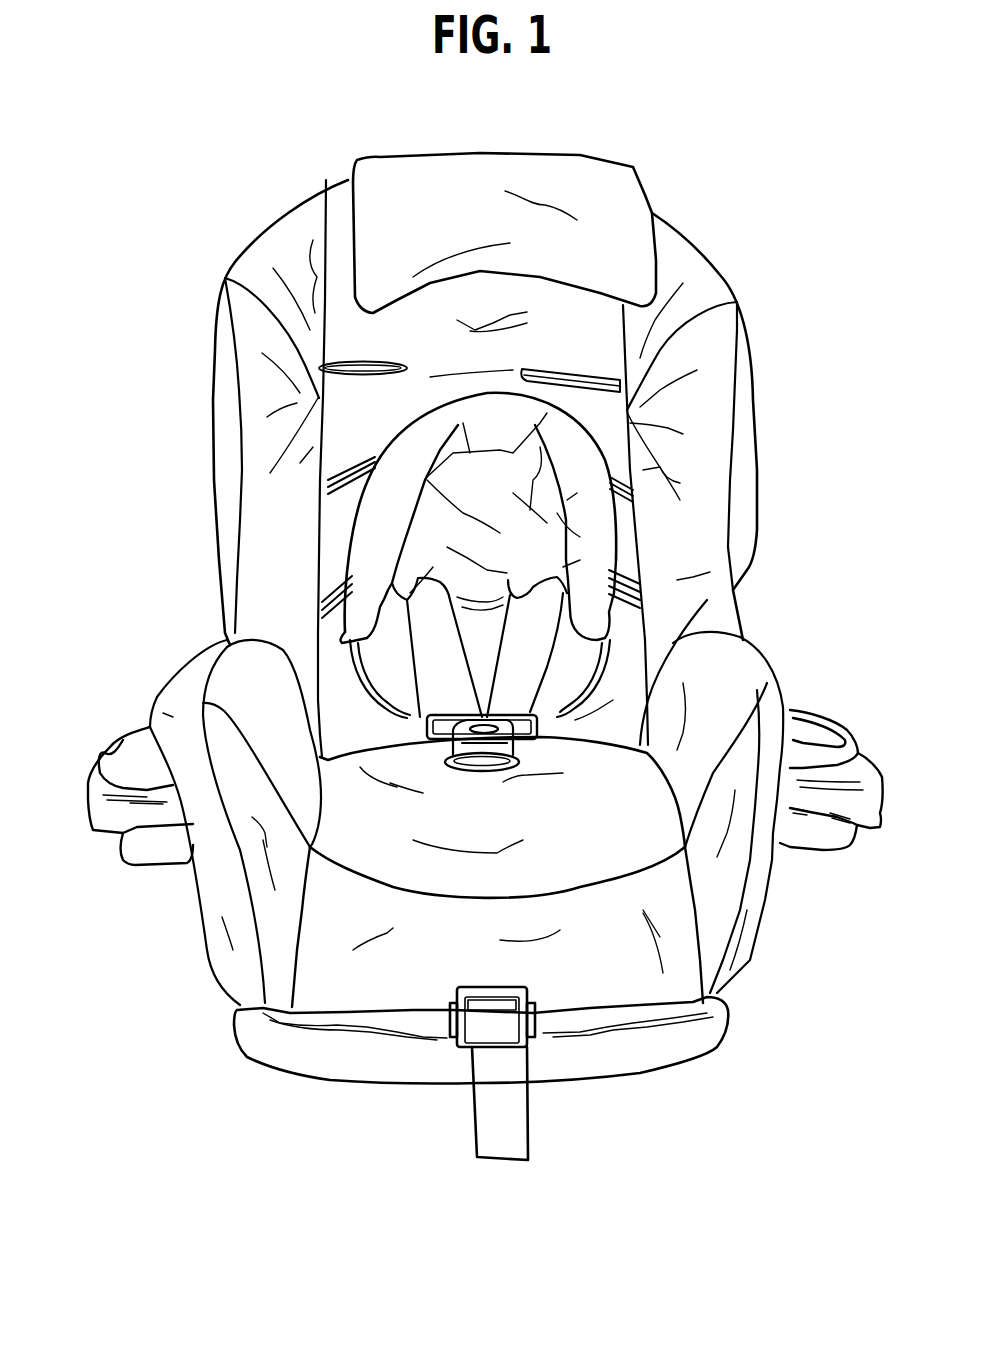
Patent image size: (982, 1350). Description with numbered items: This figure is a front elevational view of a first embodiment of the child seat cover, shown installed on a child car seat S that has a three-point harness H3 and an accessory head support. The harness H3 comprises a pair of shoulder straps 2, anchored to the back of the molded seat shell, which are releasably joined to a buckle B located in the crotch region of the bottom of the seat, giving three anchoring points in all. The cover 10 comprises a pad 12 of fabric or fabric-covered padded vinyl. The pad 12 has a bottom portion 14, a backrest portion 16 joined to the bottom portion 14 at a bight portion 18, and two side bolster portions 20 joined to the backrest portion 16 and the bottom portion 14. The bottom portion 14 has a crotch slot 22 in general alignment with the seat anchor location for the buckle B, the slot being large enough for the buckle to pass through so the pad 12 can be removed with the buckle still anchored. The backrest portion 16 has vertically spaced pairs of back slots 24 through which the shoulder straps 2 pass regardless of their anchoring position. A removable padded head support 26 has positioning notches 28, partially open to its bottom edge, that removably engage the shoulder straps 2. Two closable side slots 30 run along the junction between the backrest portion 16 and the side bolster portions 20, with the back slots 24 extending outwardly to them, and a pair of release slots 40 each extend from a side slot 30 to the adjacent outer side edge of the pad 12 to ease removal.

The cover 10 is at (248, 180).
The pad 12 is at (677, 250).
The bottom portion 14 is at (367, 863).
The backrest portion 16 is at (343, 190).
The bight portion 18 is at (598, 749).
The side bolster portions 20 is at (240, 327).
The crotch slot 22 is at (445, 773).
The back slots 24 is at (373, 370).
The head support 26 is at (440, 427).
The positioning notches 28 is at (395, 593).
The side slots 30 is at (327, 513).
The release slots 40 is at (297, 652).
The shoulder straps 2 is at (517, 642).
The buckle B is at (525, 752).
The three-point harness H3 is at (413, 724).
The child car seat S is at (693, 1047).